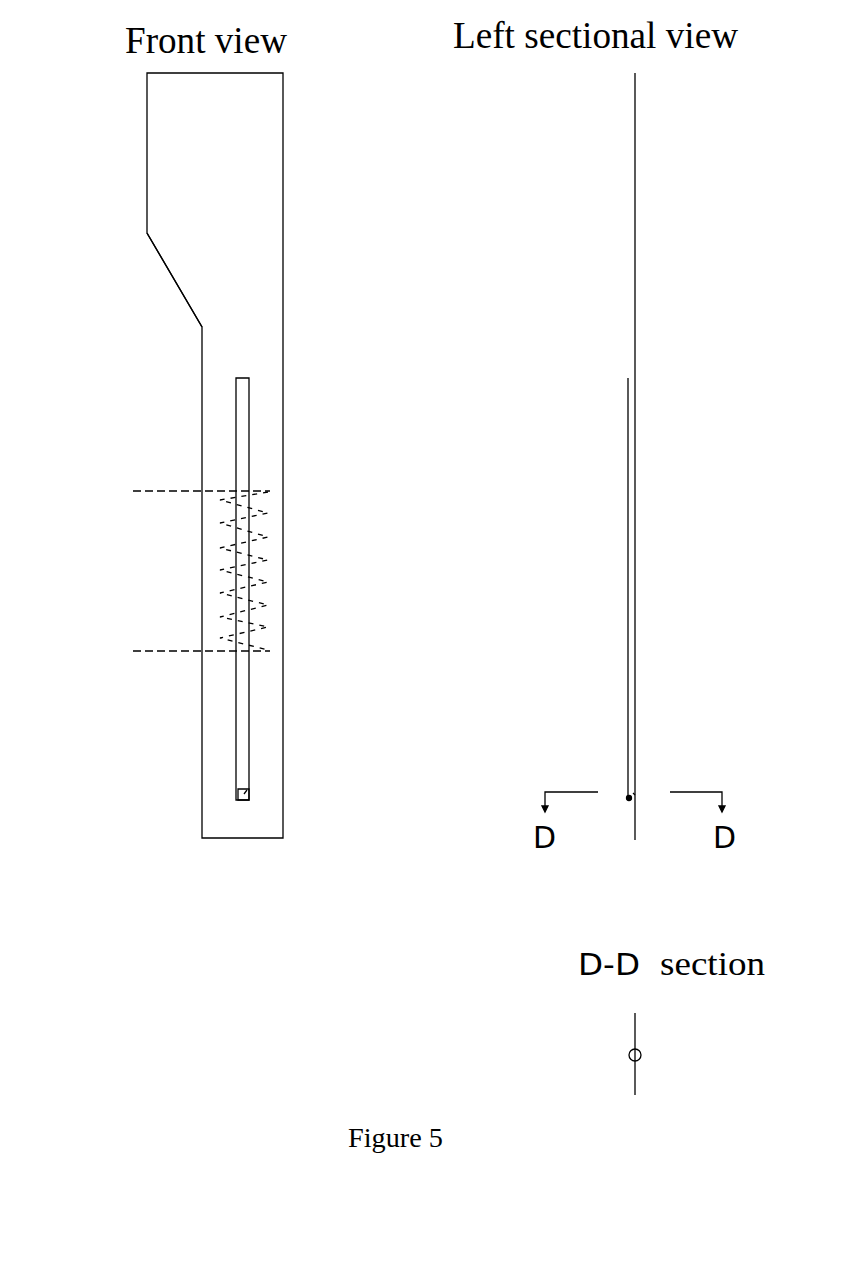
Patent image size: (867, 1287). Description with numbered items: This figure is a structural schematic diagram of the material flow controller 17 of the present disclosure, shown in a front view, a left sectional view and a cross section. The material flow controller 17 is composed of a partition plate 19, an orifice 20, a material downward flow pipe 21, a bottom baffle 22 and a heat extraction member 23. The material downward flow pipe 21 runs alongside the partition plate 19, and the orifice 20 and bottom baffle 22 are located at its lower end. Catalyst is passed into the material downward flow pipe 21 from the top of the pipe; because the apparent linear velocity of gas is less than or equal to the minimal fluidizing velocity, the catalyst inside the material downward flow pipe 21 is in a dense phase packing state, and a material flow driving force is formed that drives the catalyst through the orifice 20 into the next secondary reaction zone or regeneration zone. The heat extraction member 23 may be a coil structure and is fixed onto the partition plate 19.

The material flow controller 17 is at (195, 243).
The partition plate 19 is at (283, 428).
The orifice 20 is at (247, 792).
The material downward flow pipe 21 is at (236, 450).
The bottom baffle 22 is at (237, 798).
The heat extraction member 23 is at (220, 593).